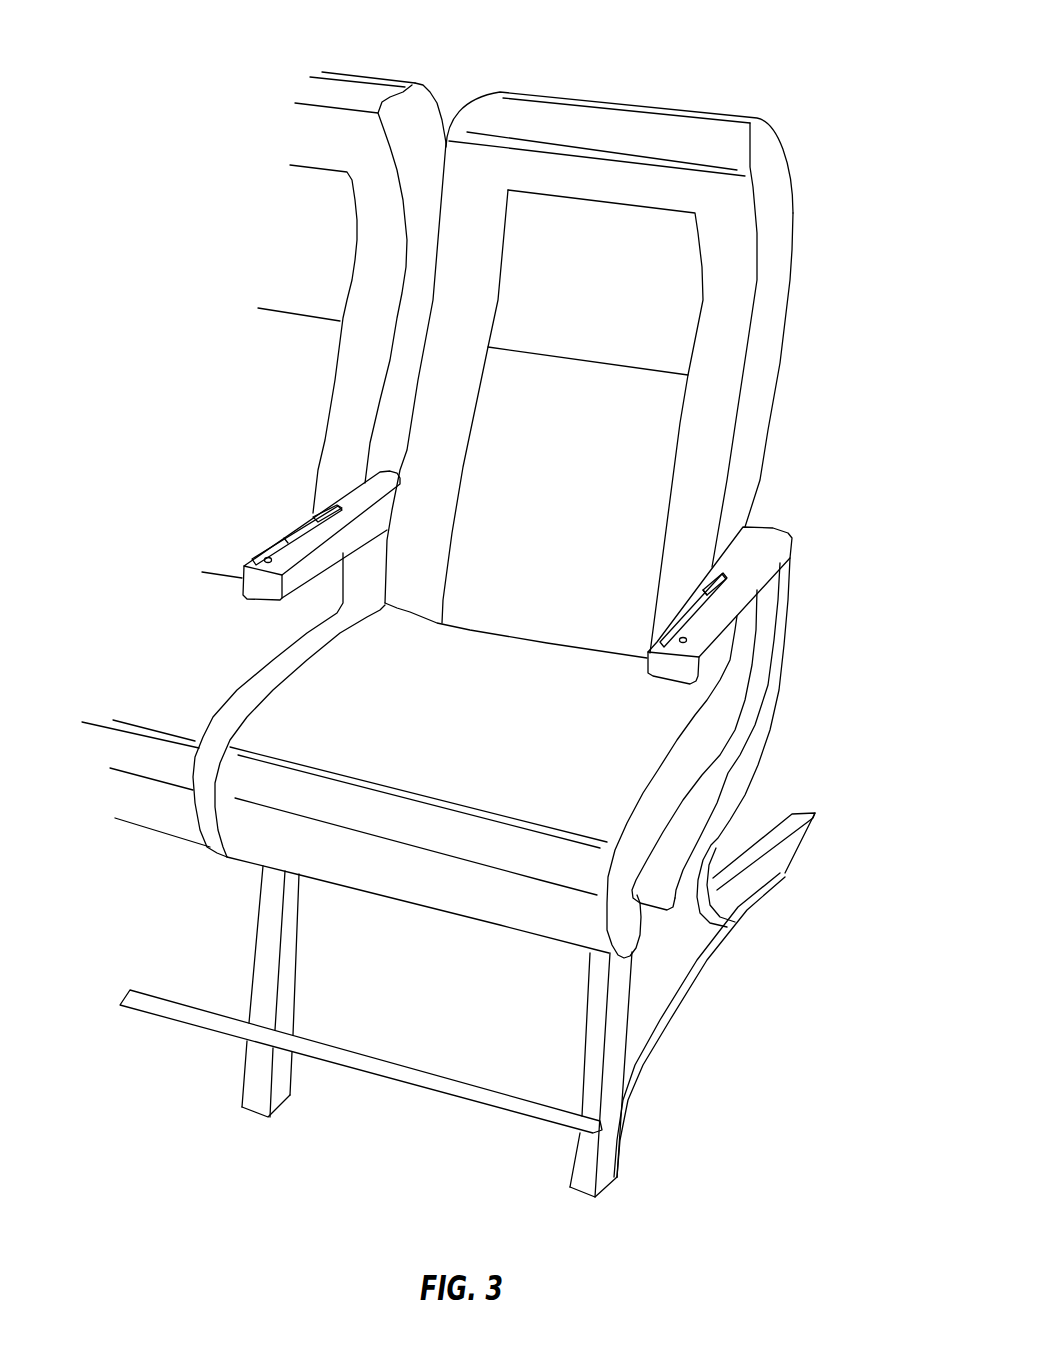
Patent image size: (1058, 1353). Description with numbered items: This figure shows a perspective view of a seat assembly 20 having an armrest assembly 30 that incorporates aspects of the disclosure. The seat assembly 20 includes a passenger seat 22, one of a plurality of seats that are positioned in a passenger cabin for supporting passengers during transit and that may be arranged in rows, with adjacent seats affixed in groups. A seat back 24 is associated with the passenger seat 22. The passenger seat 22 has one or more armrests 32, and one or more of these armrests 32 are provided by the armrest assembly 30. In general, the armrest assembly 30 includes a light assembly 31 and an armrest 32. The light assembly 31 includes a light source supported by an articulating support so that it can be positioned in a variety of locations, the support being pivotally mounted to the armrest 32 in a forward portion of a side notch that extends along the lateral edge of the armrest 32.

The seat assembly 20 is at (467, 598).
The passenger seat 22 is at (465, 755).
The seat back 24 is at (723, 260).
The armrest assembly 30 is at (523, 566).
The light assembly 31 is at (268, 553).
The armrest 32 is at (355, 508).